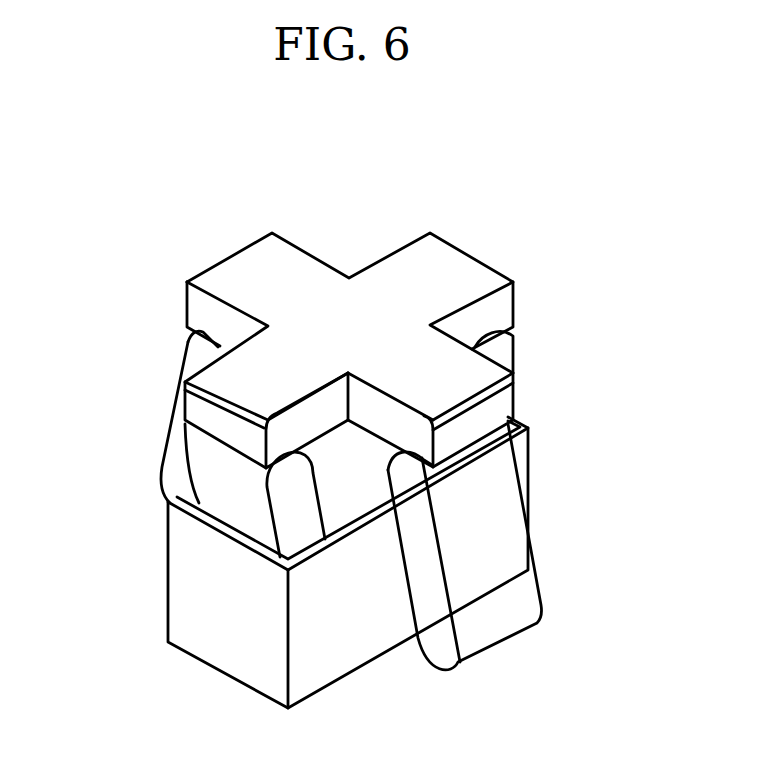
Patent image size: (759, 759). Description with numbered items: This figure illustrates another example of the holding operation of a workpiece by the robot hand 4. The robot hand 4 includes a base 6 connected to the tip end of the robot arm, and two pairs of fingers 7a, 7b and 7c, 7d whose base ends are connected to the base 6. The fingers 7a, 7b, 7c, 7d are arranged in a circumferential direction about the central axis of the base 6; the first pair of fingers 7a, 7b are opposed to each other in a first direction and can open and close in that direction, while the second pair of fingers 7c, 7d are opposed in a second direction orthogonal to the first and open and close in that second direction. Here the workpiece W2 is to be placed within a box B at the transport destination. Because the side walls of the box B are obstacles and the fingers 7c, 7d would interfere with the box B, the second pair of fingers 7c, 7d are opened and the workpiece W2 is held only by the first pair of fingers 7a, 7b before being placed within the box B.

The robot hand 4 is at (582, 198).
The base 6 is at (262, 253).
The finger 7a is at (243, 503).
The finger 7b is at (518, 346).
The finger 7c is at (540, 573).
The finger 7d is at (162, 448).
The box B is at (227, 643).
The workpiece W2 is at (343, 495).